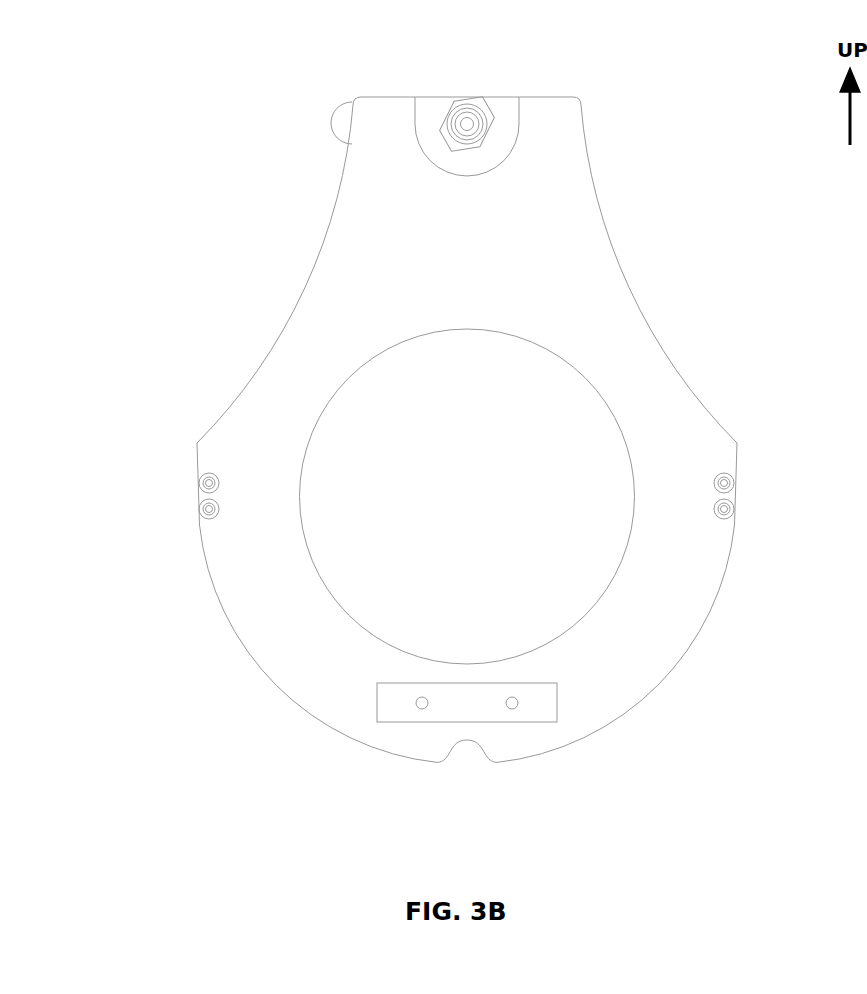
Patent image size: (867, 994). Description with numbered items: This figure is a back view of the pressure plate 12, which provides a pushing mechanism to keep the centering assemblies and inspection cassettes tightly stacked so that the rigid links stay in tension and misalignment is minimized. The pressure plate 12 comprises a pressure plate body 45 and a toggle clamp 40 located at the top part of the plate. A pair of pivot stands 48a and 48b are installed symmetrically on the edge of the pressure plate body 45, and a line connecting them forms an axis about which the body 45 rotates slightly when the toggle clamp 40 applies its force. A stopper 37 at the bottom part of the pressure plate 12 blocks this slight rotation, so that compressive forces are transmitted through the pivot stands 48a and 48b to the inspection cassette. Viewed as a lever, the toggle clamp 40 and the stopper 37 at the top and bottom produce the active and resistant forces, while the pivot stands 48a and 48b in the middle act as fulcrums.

The pressure plate 12 is at (485, 397).
The toggle clamp 40 is at (476, 77).
The pressure plate body 45 is at (597, 251).
The pivot stand 48a is at (724, 485).
The pivot stand 48b is at (209, 484).
The stopper 37 is at (542, 712).